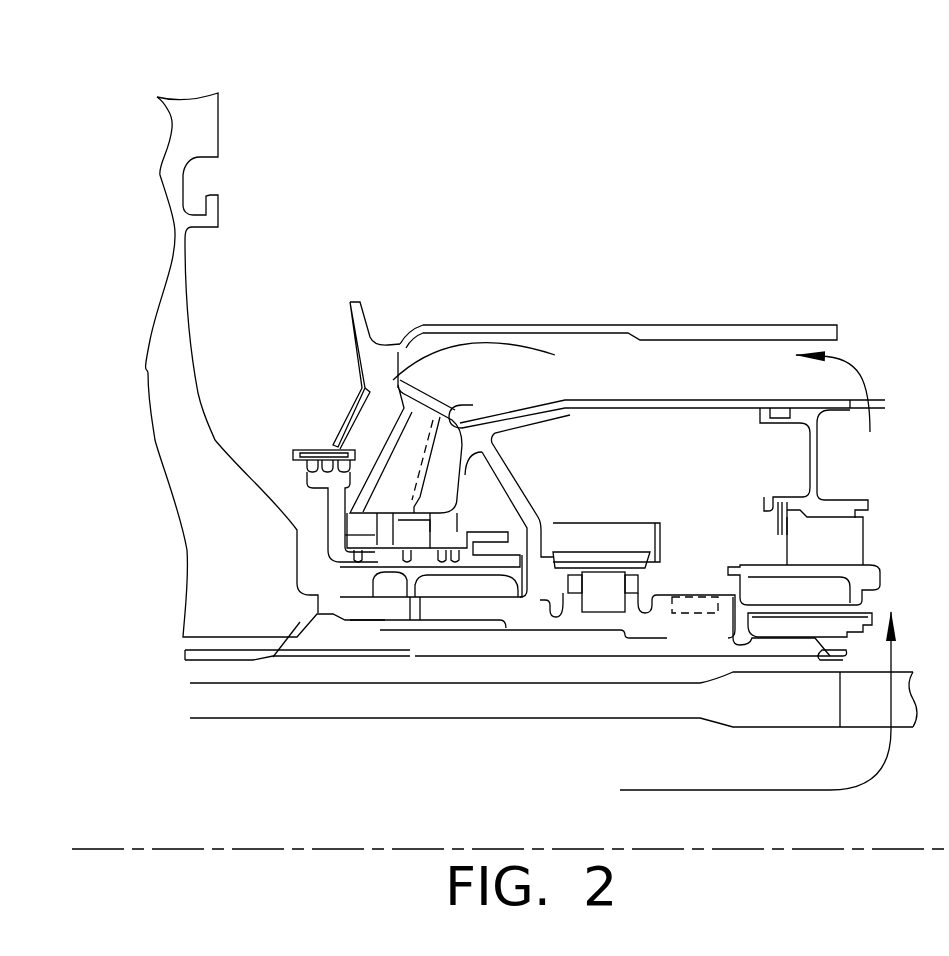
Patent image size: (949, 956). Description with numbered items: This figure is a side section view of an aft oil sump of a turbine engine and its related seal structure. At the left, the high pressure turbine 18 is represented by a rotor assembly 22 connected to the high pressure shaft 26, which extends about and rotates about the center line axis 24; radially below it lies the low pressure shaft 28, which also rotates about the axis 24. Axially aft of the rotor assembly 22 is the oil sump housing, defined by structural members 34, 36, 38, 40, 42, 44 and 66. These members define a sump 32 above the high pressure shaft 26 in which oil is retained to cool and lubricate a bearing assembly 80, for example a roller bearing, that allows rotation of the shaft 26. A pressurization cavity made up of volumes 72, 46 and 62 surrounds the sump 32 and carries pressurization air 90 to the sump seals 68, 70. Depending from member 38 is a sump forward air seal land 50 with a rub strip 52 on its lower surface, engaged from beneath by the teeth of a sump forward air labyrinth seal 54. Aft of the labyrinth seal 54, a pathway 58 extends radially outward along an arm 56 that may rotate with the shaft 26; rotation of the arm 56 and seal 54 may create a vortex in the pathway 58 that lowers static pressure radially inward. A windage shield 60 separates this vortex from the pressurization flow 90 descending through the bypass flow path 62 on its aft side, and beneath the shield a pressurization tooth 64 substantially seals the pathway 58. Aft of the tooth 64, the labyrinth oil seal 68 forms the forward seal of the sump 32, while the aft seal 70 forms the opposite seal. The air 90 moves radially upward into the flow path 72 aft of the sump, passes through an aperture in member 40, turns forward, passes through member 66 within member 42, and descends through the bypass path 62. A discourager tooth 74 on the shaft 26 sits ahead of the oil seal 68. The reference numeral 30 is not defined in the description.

The high pressure turbine 18 is at (233, 88).
The rotor assembly 22 is at (231, 118).
The center line axis 24 is at (455, 848).
The high pressure shaft 26 is at (205, 659).
The low pressure shaft 28 is at (310, 713).
The booster compressor section 30 is at (622, 242).
The sump 32 is at (638, 425).
The structural member 34 is at (362, 312).
The structural member 36 is at (483, 323).
The structural member 38 is at (343, 387).
The structural member 40 is at (560, 400).
The structural member 42 is at (530, 434).
The structural member 44 is at (506, 464).
The volume 46 is at (740, 376).
The sump forward air seal land 50 is at (313, 449).
The rub strip 52 is at (303, 450).
The sump forward air labyrinth seal 54 is at (302, 465).
The arm 56 is at (318, 513).
The pathway 58 is at (343, 510).
The windage shield 60 is at (410, 446).
The bypass flow path 62 is at (405, 475).
The pressurization tooth 64 is at (358, 552).
The member 66 is at (458, 406).
The labyrinth oil seal 68 is at (452, 578).
The aft seal 70 is at (771, 492).
The flow path 72 is at (888, 538).
The discourager tooth 74 is at (407, 555).
The bearing assembly 80 is at (642, 505).
The pressurization air 90 is at (473, 366).